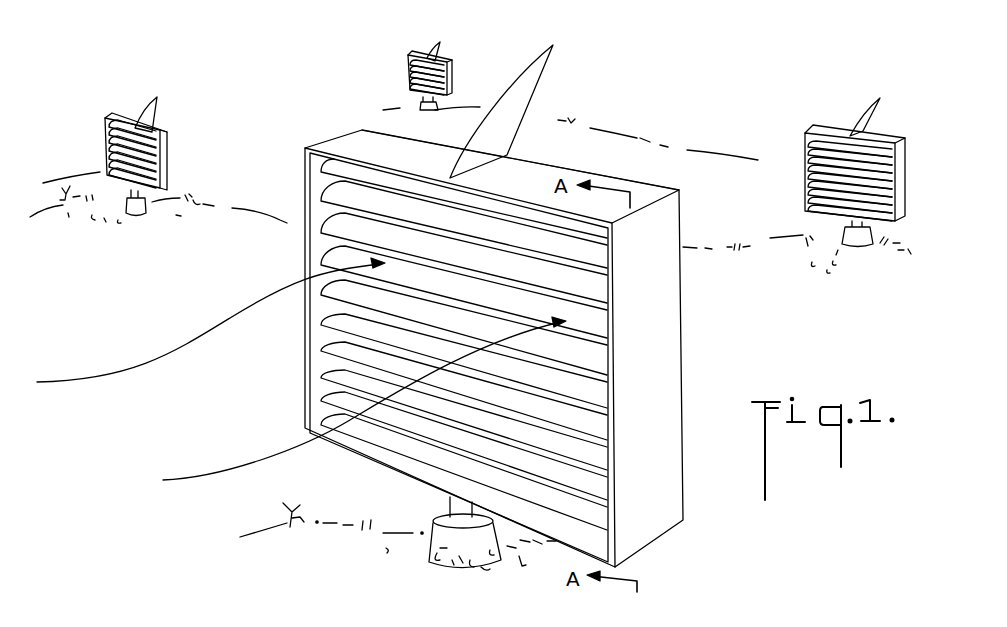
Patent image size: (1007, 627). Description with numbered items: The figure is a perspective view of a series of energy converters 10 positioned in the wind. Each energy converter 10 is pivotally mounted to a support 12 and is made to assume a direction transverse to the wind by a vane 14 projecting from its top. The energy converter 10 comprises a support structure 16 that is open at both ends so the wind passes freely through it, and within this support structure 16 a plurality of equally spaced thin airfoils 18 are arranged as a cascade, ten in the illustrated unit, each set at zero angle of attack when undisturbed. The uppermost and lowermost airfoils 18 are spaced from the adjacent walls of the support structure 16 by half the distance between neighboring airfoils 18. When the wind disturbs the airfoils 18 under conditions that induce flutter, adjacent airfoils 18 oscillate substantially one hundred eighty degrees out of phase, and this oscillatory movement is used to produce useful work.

The energy converter 10 is at (175, 160).
The support 12 is at (434, 524).
The vane 14 is at (540, 72).
The support structure 16 is at (548, 167).
The airfoil 18 is at (495, 352).